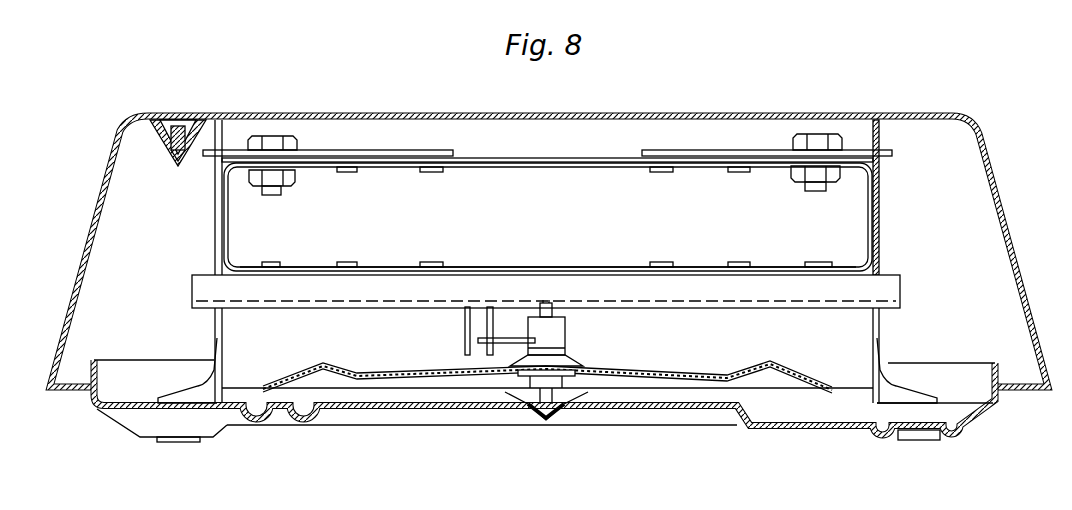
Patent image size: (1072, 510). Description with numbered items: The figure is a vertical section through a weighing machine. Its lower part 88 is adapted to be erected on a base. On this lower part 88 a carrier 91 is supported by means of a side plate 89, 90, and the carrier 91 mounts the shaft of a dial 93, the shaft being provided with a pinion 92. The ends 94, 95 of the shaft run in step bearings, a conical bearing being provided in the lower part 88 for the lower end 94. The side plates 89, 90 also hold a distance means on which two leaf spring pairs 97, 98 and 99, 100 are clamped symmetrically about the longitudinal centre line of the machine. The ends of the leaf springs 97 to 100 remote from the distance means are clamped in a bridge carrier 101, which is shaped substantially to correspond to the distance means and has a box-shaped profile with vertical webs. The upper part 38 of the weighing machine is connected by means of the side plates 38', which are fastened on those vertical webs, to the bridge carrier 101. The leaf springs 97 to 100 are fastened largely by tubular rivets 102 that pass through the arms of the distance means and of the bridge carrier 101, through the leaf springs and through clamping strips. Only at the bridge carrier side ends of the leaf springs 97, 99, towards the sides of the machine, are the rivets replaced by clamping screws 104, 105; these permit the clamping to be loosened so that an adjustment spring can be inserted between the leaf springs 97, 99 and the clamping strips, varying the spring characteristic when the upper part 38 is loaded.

The upper part 38 is at (549, 237).
The side plates 38' is at (544, 261).
The lower part 88 is at (372, 409).
The side plate 89 is at (874, 388).
The side plate 90 is at (218, 387).
The carrier 91 is at (331, 300).
The pinion 92 is at (558, 343).
The dial 93 is at (437, 385).
The lower end of the shaft 94 is at (543, 420).
The upper end of the shaft 95 is at (553, 306).
The leaf spring 97 is at (697, 151).
The leaf spring 98 is at (766, 270).
The leaf spring 99 is at (334, 150).
The leaf spring 100 is at (312, 268).
The bridge carrier 101 is at (524, 158).
The tubular rivets 102 is at (350, 172).
The clamping screw 104 is at (820, 140).
The clamping screw 105 is at (272, 136).